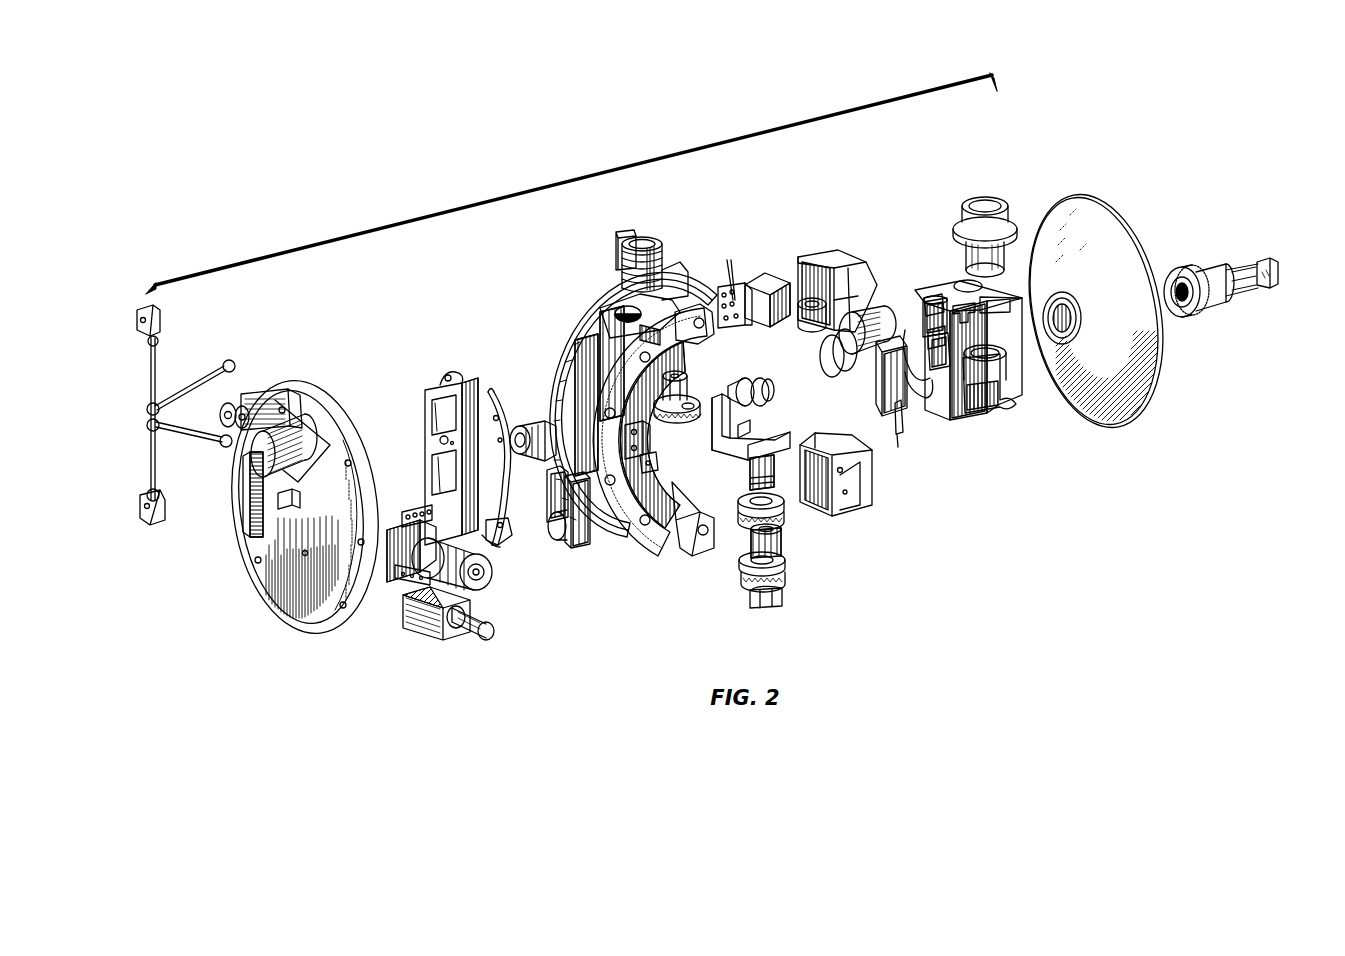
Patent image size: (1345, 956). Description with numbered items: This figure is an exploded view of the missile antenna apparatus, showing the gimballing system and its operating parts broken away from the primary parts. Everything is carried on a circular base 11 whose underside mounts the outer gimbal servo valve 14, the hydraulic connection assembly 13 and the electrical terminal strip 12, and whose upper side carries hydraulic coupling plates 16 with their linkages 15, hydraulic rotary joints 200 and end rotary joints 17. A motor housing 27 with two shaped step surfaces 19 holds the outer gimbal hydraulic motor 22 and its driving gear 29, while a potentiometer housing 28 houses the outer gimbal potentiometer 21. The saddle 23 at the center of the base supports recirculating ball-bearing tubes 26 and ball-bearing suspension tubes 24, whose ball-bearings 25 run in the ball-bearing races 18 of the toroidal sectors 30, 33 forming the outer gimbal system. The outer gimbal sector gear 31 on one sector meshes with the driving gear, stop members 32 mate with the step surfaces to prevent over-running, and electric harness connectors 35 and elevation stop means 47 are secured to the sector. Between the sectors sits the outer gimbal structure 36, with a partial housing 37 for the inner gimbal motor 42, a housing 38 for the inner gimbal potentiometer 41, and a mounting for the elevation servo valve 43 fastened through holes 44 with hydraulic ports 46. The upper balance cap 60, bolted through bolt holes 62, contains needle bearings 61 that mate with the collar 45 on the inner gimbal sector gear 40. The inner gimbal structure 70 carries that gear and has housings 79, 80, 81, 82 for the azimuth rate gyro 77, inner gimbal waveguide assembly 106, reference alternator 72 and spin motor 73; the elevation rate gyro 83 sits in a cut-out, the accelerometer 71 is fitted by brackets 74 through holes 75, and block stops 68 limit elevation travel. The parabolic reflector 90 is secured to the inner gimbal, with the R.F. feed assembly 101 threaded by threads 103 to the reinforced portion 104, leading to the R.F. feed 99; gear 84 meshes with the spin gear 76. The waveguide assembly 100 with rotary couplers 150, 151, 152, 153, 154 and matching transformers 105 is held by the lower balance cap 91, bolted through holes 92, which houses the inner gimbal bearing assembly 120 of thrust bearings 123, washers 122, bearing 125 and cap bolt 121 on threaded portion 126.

The circular base 11 is at (278, 590).
The electrical terminal strip 12 is at (250, 528).
The hydraulic connection assembly 13 is at (270, 395).
The outer gimbal servo valve 14 is at (310, 440).
The linkages 15 is at (197, 430).
The hydraulic coupling plates 16 is at (160, 312).
The end rotary joints 17 is at (160, 341).
The hydraulic rotary joints 200 is at (149, 409).
The ball-bearing races 18 is at (582, 342).
The shaped step surfaces 19 is at (386, 518).
The outer gimbal potentiometer 21 is at (486, 641).
The outer gimbal hydraulic motor 22 is at (486, 583).
The saddle 23 is at (430, 395).
The ball-bearing suspension tubes 24 is at (502, 402).
The ball-bearings 25 is at (505, 530).
The recirculating ball-bearing tubes 26 is at (492, 546).
The motor housing 27 is at (397, 570).
The potentiometer housing 28 is at (434, 632).
The driving gear 29 is at (408, 512).
The toroidal sector 30 is at (566, 354).
The outer gimbal sector gear 31 is at (648, 546).
The stop members 32 is at (700, 308).
The toroidal sector 33 is at (648, 430).
The electric harness connectors 35 is at (650, 446).
The outer gimbal structure 36 is at (676, 320).
The partial housing 37 is at (615, 312).
The housing 38 is at (632, 305).
The inner gimbal sector gear 40 is at (696, 400).
The inner gimbal potentiometer 41 is at (630, 232).
The inner gimbal motor 42 is at (658, 245).
The elevation servo valve 43 is at (764, 273).
The holes 44 is at (728, 326).
The collar 45 is at (690, 378).
The hydraulic ports 46 is at (728, 260).
The elevation stop means 47 is at (658, 463).
The upper balance cap 60 is at (842, 268).
The needle bearings 61 is at (800, 322).
The bolt holes 62 is at (824, 328).
The block stops 68 is at (1003, 400).
The inner gimbal structure 70 is at (975, 413).
The accelerometer 71 is at (878, 402).
The reference alternator 72 is at (846, 370).
The spin motor 73 is at (830, 356).
The brackets 74 is at (925, 375).
The holes 75 is at (896, 434).
The spin gear 76 is at (880, 312).
The azimuth rate gyro 77 is at (1003, 205).
The housing 79 is at (1003, 360).
The housing 80 is at (955, 412).
The housing 81 is at (918, 306).
The housing 82 is at (924, 300).
The elevation rate gyro 83 is at (930, 398).
The gear 84 is at (1170, 280).
The parabolic reflector 90 is at (1112, 210).
The lower balance cap 91 is at (850, 508).
The holes 92 is at (848, 470).
The R.F. feed 99 is at (1278, 284).
The waveguide assembly 100 is at (617, 401).
The R.F. feed assembly 101 is at (1226, 292).
The threads 103 is at (1190, 315).
The reinforced portion 104 is at (1072, 305).
The matching transformers 105 is at (770, 394).
The inner gimbal waveguide assembly 106 is at (781, 437).
The inner gimbal bearing assembly 120 is at (808, 554).
The cap bolt 121 is at (755, 607).
The washers 122 is at (740, 502).
The thrust bearings 123 is at (784, 516).
The bearing 125 is at (782, 545).
The threaded portion 126 is at (750, 475).
The rotary coupler 150 is at (521, 426).
The rotary coupler 151 is at (598, 363).
The rotary coupler 152 is at (548, 486).
The rotary coupler 153 is at (557, 540).
The rotary coupler 154 is at (592, 544).